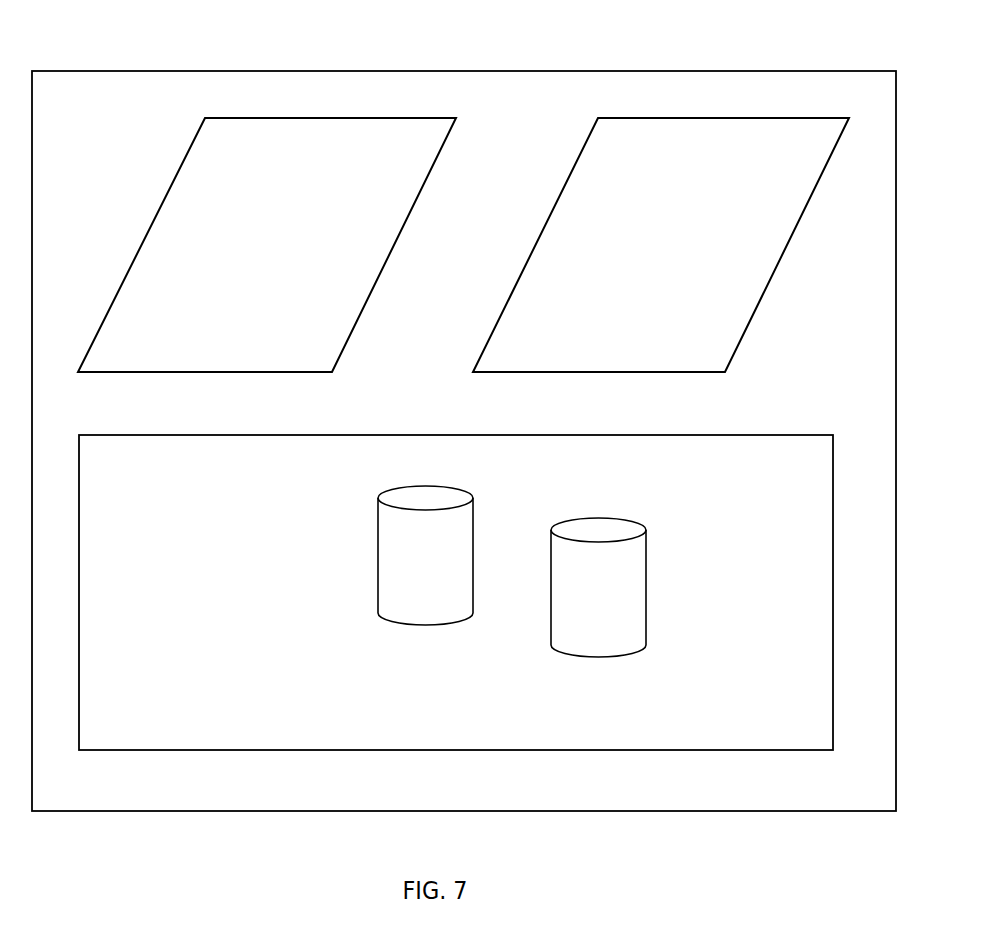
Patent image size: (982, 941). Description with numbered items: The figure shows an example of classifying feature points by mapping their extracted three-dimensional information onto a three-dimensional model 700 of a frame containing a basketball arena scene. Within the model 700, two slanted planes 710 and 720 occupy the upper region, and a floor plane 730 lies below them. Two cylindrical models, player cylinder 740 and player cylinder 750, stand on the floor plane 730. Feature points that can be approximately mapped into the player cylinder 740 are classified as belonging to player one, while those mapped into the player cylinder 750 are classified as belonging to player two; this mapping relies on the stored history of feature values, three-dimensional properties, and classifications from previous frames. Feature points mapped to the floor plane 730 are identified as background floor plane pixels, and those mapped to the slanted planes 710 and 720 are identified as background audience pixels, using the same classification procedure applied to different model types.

The model 700 is at (465, 71).
The slanted plane 710 is at (267, 245).
The slanted plane 720 is at (661, 245).
The floor plane 730 is at (456, 592).
The player cylinder 740 is at (425, 555).
The player cylinder 750 is at (598, 587).